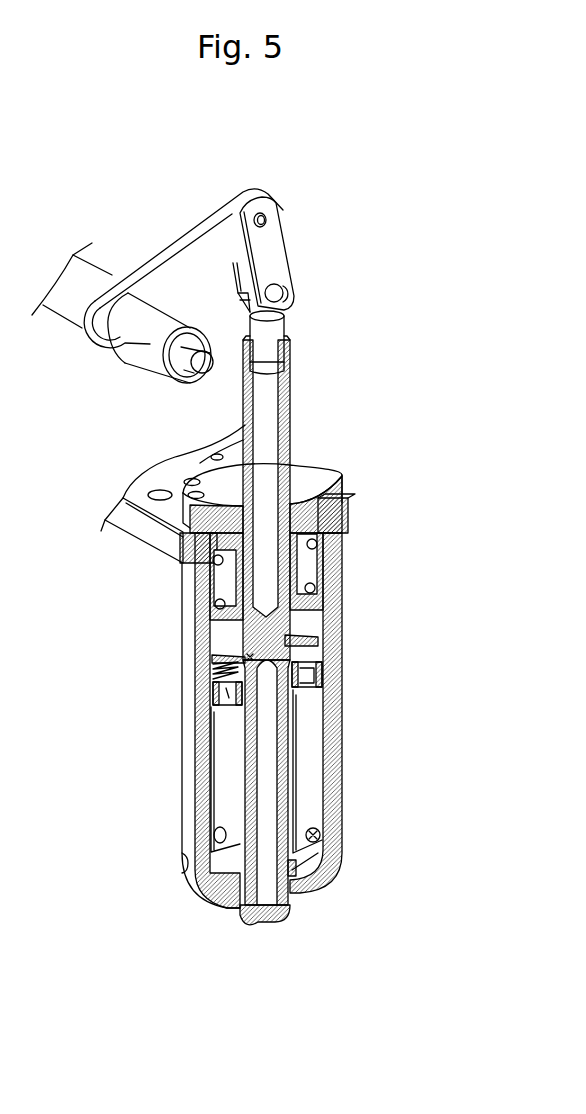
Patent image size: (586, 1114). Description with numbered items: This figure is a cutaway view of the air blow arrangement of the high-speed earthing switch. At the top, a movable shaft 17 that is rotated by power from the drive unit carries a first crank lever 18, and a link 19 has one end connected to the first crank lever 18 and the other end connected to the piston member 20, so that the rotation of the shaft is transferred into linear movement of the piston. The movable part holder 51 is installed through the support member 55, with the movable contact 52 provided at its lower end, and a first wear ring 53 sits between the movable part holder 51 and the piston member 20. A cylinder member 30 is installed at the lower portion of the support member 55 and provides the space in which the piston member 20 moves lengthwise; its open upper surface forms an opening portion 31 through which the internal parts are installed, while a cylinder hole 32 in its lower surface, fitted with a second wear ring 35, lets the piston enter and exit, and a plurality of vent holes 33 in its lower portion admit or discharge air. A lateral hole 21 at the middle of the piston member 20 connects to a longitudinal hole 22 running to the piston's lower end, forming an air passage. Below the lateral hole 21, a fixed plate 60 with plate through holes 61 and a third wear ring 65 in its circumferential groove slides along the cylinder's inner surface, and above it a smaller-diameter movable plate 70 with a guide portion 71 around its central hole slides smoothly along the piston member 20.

The movable shaft 17 is at (140, 345).
The first crank lever 18 is at (190, 257).
The link 19 is at (277, 247).
The piston member 20 is at (275, 622).
The lateral hole 21 is at (245, 655).
The longitudinal hole 22 is at (268, 743).
The cylinder member 30 is at (333, 566).
The opening portion 31 is at (322, 530).
The cylinder hole 32 is at (292, 900).
The vent holes 33 is at (318, 834).
The second wear ring 35 is at (297, 868).
The movable part holder 51 is at (317, 468).
The movable contact 52 is at (212, 580).
The first wear ring 53 is at (297, 493).
The support member 55 is at (156, 530).
The fixed plate 60 is at (302, 662).
The plate through holes 61 is at (228, 702).
The third wear ring 65 is at (230, 693).
The movable plate 70 is at (300, 641).
The guide portion 71 is at (240, 640).